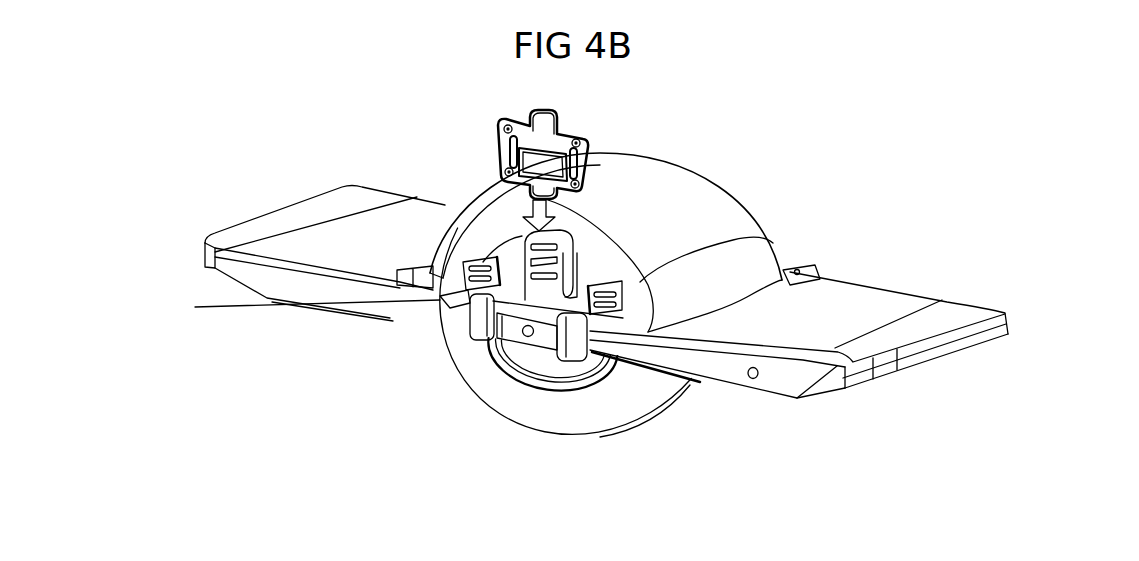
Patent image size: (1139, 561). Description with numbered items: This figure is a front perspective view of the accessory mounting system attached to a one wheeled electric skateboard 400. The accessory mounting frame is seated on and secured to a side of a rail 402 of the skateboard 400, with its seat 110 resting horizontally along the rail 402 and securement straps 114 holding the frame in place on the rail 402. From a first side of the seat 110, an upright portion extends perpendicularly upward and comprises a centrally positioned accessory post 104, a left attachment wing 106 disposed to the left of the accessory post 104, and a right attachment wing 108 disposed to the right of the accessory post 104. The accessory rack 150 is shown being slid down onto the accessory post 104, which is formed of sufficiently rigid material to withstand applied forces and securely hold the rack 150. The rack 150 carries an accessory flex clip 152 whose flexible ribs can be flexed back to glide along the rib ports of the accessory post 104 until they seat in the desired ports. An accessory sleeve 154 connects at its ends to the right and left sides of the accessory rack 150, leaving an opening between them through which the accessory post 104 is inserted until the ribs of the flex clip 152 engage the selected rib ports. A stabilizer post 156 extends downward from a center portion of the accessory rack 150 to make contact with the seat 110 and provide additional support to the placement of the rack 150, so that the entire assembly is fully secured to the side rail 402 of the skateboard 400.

The one wheeled electric skateboard 400 is at (601, 268).
The rail 402 is at (840, 370).
The accessory post 104 is at (585, 237).
The left attachment wing 106 is at (449, 274).
The right attachment wing 108 is at (640, 288).
The seat 110 is at (434, 301).
The securement strap 114 is at (690, 381).
The accessory rack 150 is at (514, 153).
The accessory flex clip 152 is at (555, 127).
The accessory sleeve 154 is at (517, 160).
The stabilizer post 156 is at (558, 187).